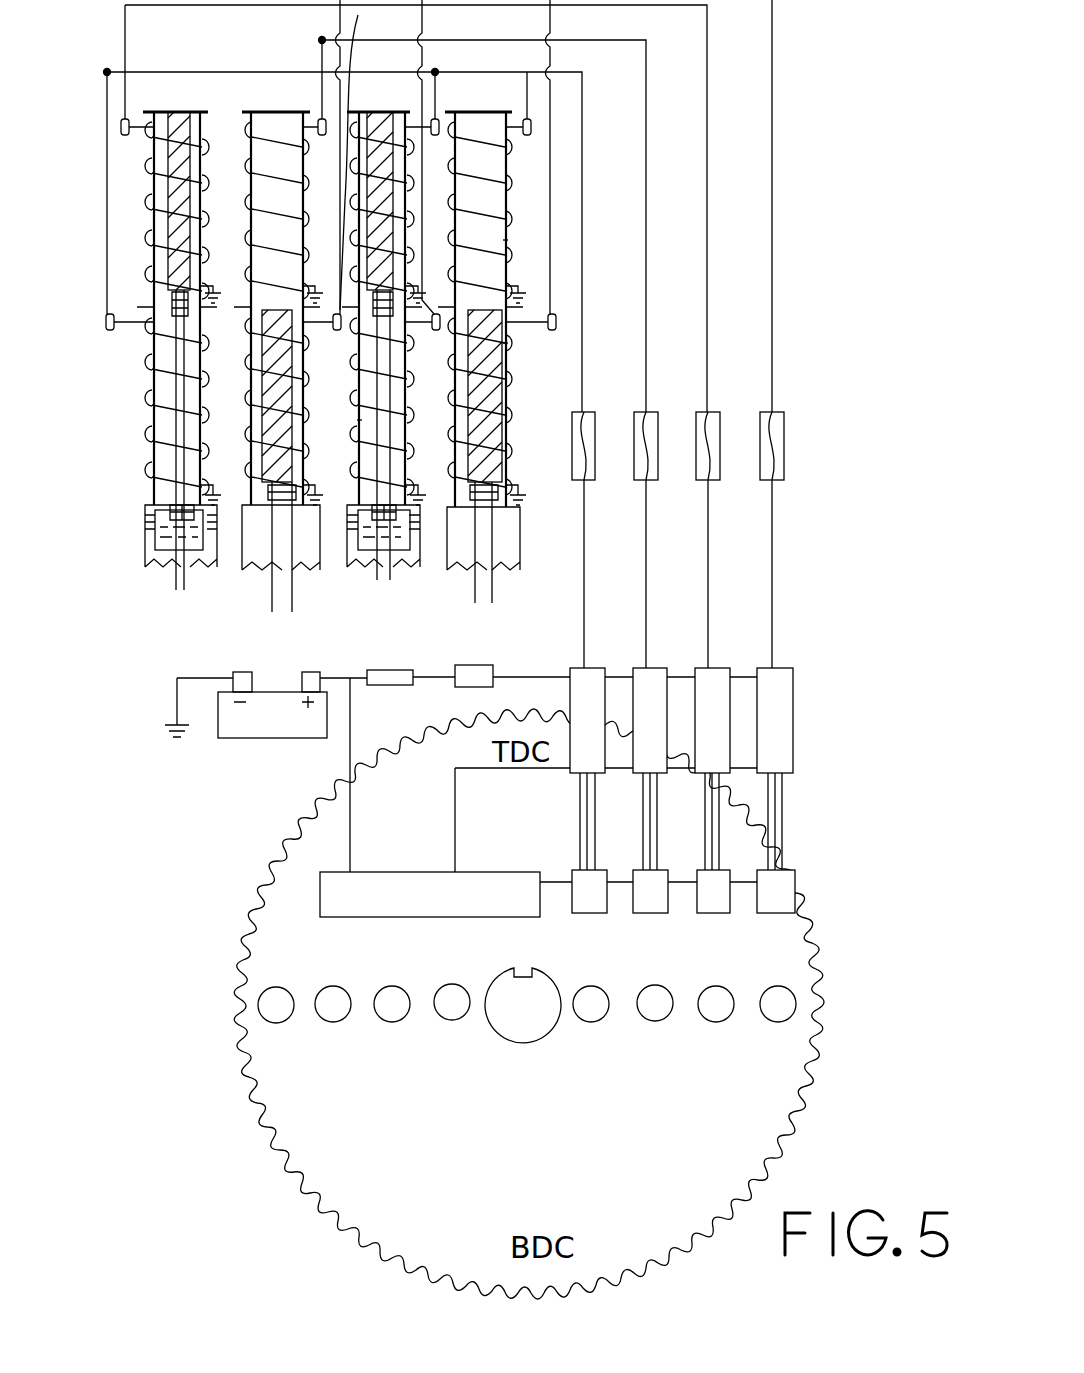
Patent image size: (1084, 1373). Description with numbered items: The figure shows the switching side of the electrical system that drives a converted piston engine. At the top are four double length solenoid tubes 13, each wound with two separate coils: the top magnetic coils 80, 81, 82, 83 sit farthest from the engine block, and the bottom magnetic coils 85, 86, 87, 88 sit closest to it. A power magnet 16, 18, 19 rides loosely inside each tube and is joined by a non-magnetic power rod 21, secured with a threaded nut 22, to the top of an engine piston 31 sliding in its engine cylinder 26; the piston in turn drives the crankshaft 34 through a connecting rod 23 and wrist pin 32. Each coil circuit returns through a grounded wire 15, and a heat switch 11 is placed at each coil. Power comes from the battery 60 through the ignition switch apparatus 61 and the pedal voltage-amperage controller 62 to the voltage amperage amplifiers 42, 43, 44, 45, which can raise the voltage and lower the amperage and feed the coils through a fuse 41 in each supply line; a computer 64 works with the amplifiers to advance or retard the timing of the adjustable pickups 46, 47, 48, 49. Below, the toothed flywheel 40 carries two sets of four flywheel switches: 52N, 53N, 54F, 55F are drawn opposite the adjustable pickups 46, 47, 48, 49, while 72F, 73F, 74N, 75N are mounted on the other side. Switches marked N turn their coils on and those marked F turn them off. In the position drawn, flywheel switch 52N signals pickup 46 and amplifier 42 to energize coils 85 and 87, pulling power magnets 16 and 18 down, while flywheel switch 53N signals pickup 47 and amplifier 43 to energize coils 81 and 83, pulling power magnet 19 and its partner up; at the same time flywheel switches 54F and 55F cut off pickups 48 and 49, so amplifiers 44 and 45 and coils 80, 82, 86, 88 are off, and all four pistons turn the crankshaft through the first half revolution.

The heat switch 11 is at (325, 120).
The double length solenoid tube 13 is at (300, 130).
The grounded wire 15 is at (522, 292).
The power magnet 16 is at (171, 182).
The power magnet 18 is at (410, 115).
The power magnet 19 is at (500, 405).
The power rod made of non-magnetic material 21 is at (195, 437).
The threaded nut 22 is at (200, 540).
The connecting rod between engine piston and crankshaft 23 is at (380, 580).
The engine cylinder 26 is at (495, 552).
The engine piston 31 is at (160, 525).
The wrist pin 32 is at (392, 565).
The crankshaft 34 is at (525, 1012).
The flywheel 40 is at (360, 1180).
The fuse 41 is at (780, 500).
The voltage amperage amplifier 42 is at (585, 702).
The voltage amperage amplifier 43 is at (650, 700).
The voltage amperage amplifier 44 is at (716, 710).
The voltage amperage amplifier 45 is at (775, 710).
The adjustable pickup 46 is at (590, 893).
The adjustable pickup 47 is at (650, 892).
The adjustable pickup 48 is at (713, 893).
The adjustable pickup 49 is at (780, 897).
The battery 60 is at (293, 718).
The ignition switch apparatus 61 is at (395, 670).
The pedal voltage-amperage controller 62 is at (486, 665).
The computer 64 is at (330, 878).
The top magnetic coil 80 is at (152, 205).
The top magnetic coil 81 is at (240, 135).
The top magnetic coil 82 is at (350, 32).
The top magnetic coil 83 is at (510, 250).
The bottom magnetic coil 85 is at (162, 365).
The bottom magnetic coil 86 is at (262, 420).
The bottom magnetic coil 87 is at (355, 420).
The bottom magnetic coil 88 is at (505, 343).
The flywheel switch 52N is at (595, 1005).
The flywheel switch 53N is at (655, 1012).
The flywheel switch 54F is at (710, 1012).
The flywheel switch 55F is at (782, 1008).
The flywheel switch 72F is at (460, 1008).
The flywheel switch 73F is at (393, 1005).
The flywheel switch 74N is at (340, 1008).
The flywheel switch 75N is at (270, 1000).